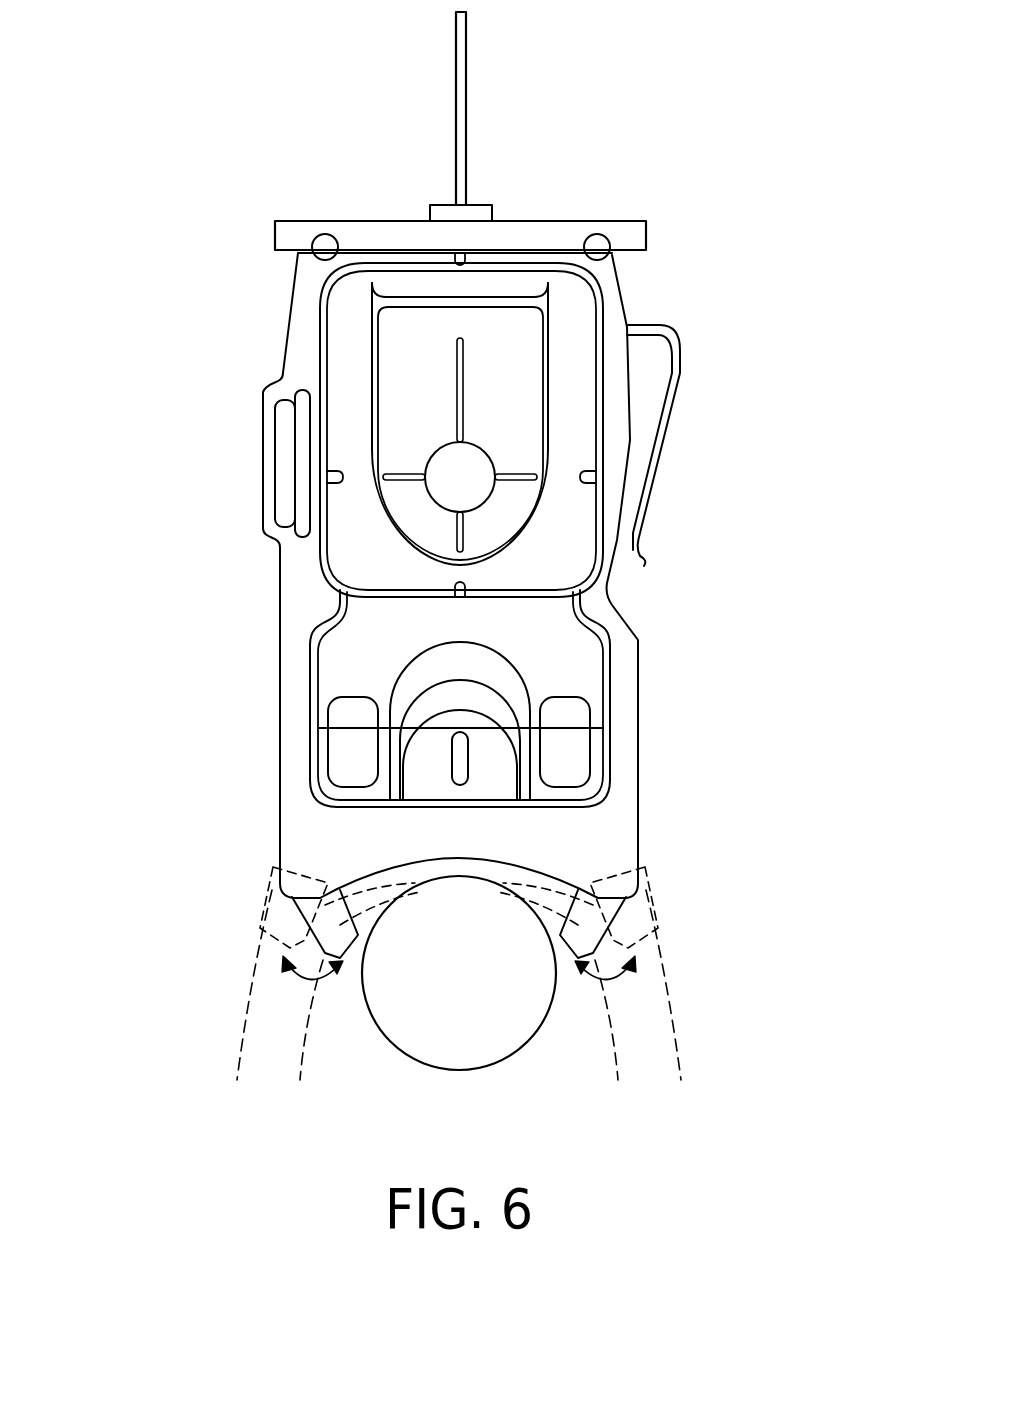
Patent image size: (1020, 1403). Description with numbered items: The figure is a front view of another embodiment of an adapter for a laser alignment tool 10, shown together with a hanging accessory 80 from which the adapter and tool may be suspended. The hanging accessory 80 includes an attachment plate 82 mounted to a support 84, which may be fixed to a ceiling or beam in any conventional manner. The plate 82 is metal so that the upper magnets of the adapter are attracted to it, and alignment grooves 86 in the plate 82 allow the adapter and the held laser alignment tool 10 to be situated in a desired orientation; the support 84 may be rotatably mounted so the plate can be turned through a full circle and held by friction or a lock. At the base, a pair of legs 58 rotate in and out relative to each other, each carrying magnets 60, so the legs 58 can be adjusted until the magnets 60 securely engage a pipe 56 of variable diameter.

The laser alignment tool 10 is at (328, 668).
The pipe 56 is at (240, 1060).
The legs 58 is at (277, 913).
The magnets 60 is at (352, 953).
The hanging accessory 80 is at (468, 114).
The attachment plate 82 is at (275, 236).
The support 84 is at (455, 54).
The alignment grooves 86 is at (328, 236).